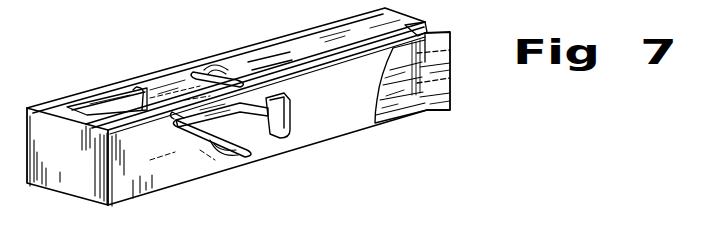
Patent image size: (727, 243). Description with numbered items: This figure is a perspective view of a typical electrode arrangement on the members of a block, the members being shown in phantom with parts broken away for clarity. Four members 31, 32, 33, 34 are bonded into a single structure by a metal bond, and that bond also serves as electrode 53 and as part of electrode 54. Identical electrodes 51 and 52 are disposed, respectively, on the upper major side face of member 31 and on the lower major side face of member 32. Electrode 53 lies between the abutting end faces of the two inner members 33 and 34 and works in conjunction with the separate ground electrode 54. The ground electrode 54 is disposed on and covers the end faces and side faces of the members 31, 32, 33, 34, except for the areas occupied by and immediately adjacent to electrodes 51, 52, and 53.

The member 31 is at (437, 47).
The member 32 is at (438, 98).
The inner member 33 is at (265, 125).
The inner member 34 is at (438, 70).
The electrode 51 is at (115, 102).
The electrode 52 is at (397, 115).
The electrode 53 is at (257, 122).
The ground electrode 54 is at (138, 80).